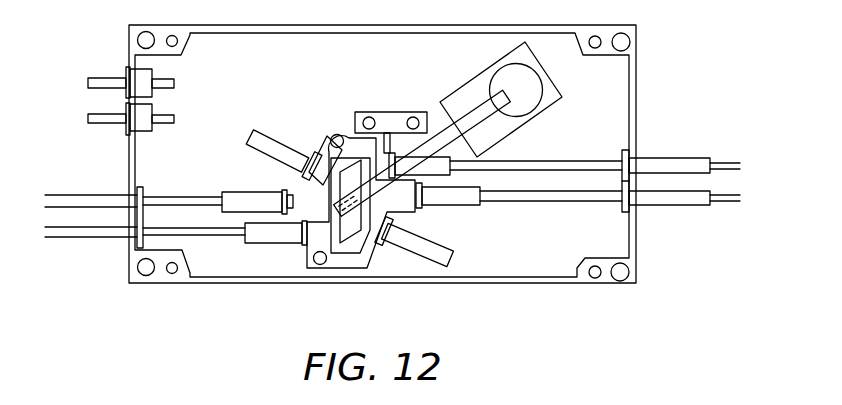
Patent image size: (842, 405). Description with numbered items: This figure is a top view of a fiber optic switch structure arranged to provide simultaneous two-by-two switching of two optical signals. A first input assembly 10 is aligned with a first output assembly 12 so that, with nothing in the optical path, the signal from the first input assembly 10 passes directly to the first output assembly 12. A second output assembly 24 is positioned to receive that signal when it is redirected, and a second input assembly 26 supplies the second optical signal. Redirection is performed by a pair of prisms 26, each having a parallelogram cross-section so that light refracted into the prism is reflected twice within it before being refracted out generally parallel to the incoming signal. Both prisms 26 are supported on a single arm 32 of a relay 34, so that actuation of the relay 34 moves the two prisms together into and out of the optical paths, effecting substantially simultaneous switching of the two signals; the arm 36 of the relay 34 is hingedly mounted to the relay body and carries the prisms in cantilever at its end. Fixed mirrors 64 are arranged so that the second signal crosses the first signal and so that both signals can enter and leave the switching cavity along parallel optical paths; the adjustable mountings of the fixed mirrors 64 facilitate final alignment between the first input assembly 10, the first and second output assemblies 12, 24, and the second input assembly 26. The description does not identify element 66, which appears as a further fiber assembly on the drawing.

The first input assembly 10 is at (238, 198).
The first output assembly 12 is at (467, 203).
The second output assembly 24 is at (413, 111).
The prism 26 is at (352, 172).
The arm 32 is at (293, 187).
The relay 34 is at (477, 90).
The arm 36 is at (479, 117).
The fixed mirrors 64 is at (315, 150).
The third optical fiber collimator 66 is at (285, 238).